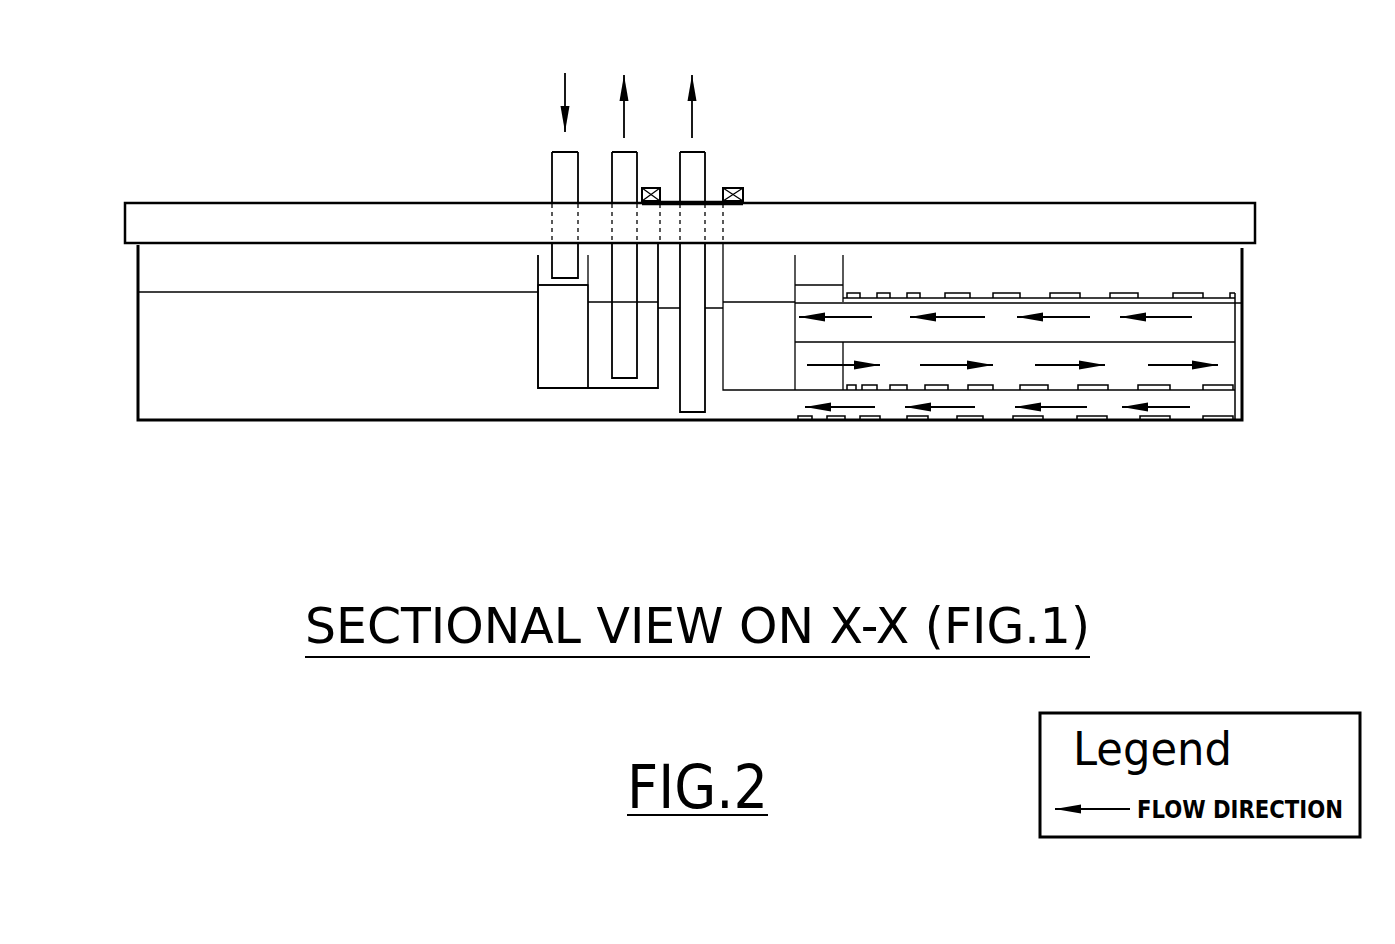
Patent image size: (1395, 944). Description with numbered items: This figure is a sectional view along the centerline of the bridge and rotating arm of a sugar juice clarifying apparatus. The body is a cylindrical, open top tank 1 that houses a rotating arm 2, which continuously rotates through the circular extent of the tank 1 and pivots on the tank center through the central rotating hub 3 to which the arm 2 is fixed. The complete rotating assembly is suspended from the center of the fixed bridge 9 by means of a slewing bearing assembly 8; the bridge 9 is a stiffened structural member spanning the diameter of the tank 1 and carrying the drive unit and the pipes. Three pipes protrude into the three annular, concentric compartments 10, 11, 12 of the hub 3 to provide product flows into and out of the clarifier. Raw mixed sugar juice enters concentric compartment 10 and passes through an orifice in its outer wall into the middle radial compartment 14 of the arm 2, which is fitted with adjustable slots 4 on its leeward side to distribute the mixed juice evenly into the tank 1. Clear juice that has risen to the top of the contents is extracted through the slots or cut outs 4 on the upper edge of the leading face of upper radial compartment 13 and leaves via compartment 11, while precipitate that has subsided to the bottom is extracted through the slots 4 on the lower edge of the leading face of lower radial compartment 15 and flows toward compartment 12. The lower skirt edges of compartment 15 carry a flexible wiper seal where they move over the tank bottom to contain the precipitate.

The tank 1 is at (146, 366).
The rotating arm 2 is at (1126, 292).
The central rotating hub 3 is at (536, 326).
The adjustable slots 4 is at (1039, 293).
The slewing bearing assembly 8 is at (748, 187).
The fixed bridge 9 is at (879, 201).
The concentric compartment 10 is at (554, 375).
The concentric compartment 11 is at (599, 376).
The concentric compartment 12 is at (644, 410).
The upper radial compartment 13 is at (1247, 316).
The middle radial compartment 14 is at (1247, 365).
The lower radial compartment 15 is at (1247, 411).